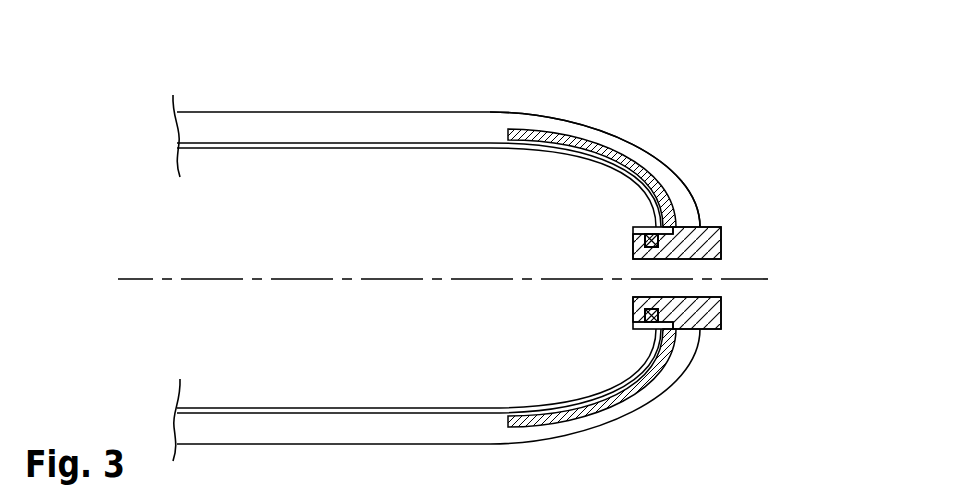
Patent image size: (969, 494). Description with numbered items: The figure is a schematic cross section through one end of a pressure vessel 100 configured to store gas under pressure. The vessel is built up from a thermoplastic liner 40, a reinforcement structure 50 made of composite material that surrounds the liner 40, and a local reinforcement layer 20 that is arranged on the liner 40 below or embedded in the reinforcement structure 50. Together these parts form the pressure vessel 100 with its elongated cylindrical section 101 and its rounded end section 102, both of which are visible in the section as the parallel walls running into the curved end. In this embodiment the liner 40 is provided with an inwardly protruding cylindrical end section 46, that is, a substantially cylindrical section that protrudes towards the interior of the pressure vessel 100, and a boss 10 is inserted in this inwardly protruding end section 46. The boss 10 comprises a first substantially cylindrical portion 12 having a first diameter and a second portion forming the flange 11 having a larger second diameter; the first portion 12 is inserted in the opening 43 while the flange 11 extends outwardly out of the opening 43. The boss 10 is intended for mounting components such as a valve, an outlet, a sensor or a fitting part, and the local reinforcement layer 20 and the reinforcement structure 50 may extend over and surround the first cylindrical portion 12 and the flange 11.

The pressure vessel 100 is at (558, 93).
The elongated cylindrical section 101 is at (376, 453).
The rounded end section 102 is at (646, 134).
The boss 10 is at (731, 238).
The flange 11 is at (692, 222).
The first substantially cylindrical portion 12 is at (624, 325).
The local reinforcement layer 20 is at (587, 150).
The thermoplastic liner 40 is at (249, 153).
The opening 43 is at (718, 288).
The inwardly protruding cylindrical end section 46 is at (648, 333).
The reinforcement structure 50 is at (484, 121).